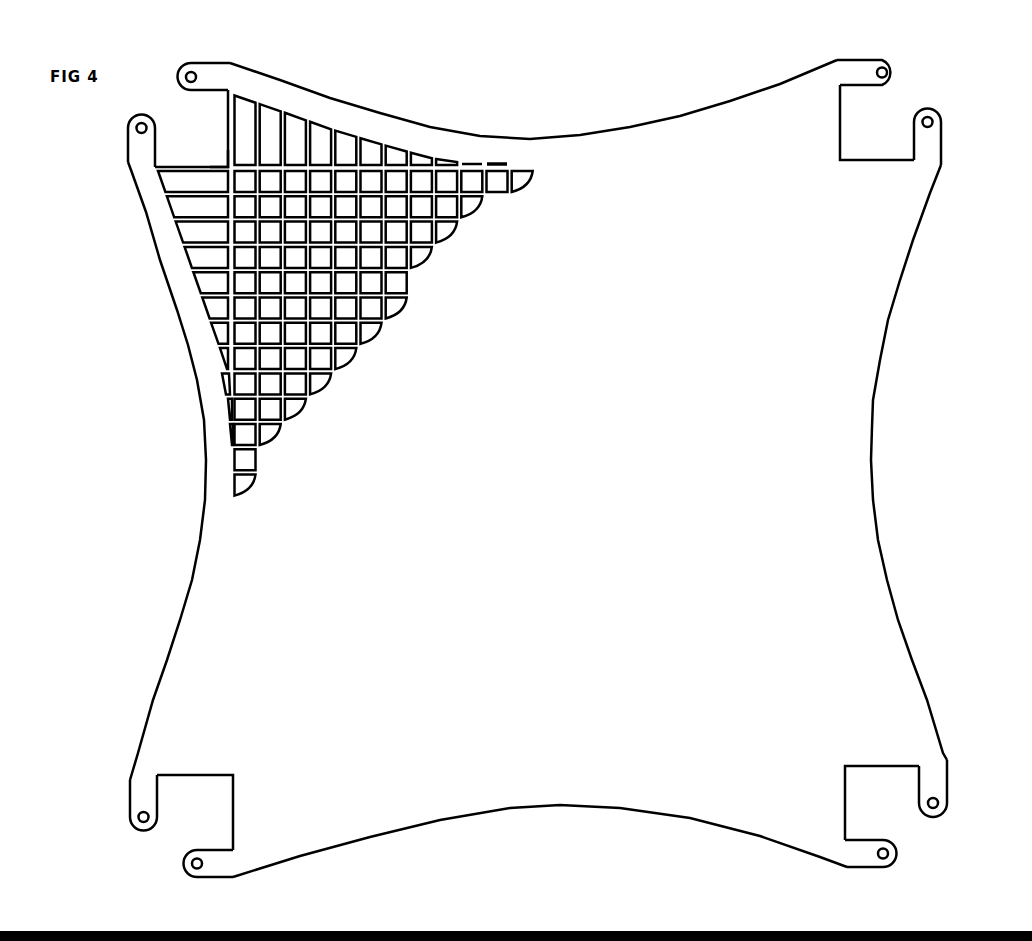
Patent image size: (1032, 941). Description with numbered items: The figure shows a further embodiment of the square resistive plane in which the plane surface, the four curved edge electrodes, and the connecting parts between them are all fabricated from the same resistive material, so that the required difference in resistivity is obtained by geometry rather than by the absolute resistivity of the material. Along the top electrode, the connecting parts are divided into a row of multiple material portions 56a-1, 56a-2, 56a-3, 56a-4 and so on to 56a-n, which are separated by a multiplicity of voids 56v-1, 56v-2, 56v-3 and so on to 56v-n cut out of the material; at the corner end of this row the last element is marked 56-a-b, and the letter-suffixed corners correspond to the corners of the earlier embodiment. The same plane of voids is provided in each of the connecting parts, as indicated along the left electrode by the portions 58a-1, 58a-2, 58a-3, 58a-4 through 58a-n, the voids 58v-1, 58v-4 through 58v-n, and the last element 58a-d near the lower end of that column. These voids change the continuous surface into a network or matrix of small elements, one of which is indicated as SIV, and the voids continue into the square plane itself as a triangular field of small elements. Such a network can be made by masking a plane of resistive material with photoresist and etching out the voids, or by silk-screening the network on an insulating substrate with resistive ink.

The portion of the connecting parts 56a-1 is at (231, 95).
The void 56v-1 is at (244, 110).
The portion of the connecting parts 56a-2 is at (266, 121).
The void 56v-2 is at (284, 126).
The portion of the connecting parts 56a-3 is at (296, 137).
The void 56v-3 is at (322, 142).
The portion of the connecting parts 56a-4 is at (352, 140).
The portion of the connecting parts 56a-n is at (483, 160).
The void 56v-n is at (495, 163).
The corner cell of top row 56-a-b is at (500, 163).
The portion of the connecting parts 58a-1 is at (160, 175).
The void 58v-1 is at (191, 128).
The portion of the connecting parts 58a-2 is at (174, 197).
The portion of the connecting parts 58a-3 is at (182, 222).
The portion of the connecting parts 58a-4 is at (190, 250).
The void 58v-4 is at (200, 258).
The portion of the connecting parts 58a-n is at (232, 412).
The void 58v-n is at (231, 437).
The last active cell of left column 58a-d is at (234, 470).
The sensor cell SIV is at (421, 233).